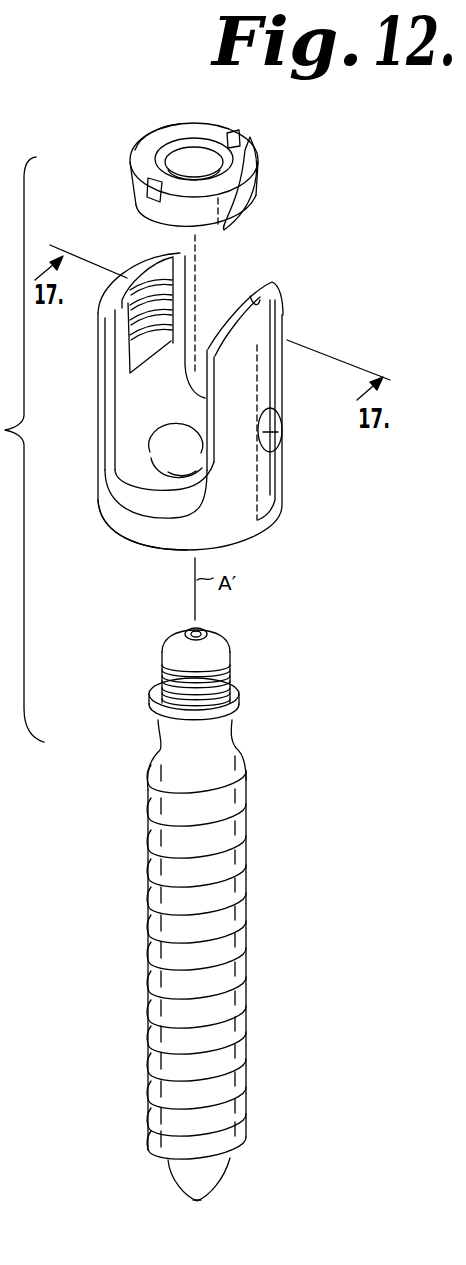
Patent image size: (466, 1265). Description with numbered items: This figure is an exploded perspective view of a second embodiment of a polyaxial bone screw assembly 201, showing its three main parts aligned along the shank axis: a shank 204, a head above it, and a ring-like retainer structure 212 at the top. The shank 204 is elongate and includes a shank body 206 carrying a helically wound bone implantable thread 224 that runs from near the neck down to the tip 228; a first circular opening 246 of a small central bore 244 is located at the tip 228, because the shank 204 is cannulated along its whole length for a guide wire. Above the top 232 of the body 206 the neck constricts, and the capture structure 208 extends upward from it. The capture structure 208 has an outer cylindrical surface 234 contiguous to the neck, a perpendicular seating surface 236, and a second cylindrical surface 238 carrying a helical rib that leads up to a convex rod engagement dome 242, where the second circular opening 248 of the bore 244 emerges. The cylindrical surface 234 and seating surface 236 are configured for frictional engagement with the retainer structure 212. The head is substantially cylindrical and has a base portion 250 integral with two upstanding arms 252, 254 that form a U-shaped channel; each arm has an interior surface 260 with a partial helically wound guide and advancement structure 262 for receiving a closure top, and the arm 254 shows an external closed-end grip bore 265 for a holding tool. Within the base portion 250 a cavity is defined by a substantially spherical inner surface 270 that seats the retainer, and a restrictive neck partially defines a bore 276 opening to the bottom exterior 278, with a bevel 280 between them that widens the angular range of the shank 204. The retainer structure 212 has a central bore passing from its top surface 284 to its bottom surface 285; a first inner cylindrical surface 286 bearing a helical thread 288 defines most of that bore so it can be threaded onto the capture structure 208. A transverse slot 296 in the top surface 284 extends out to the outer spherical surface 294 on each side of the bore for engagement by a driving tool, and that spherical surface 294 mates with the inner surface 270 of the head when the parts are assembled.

The polyaxial bone screw assembly 201 is at (122, 960).
The shank 204 is at (243, 822).
The shank body 206 is at (242, 883).
The capture structure 208 is at (230, 662).
The retainer structure 212 is at (258, 180).
The bone implantable thread 224 is at (242, 938).
The tip 228 is at (200, 1203).
The top of the body 232 is at (244, 750).
The outer cylindrical surface 234 is at (155, 707).
The seating surface 236 is at (232, 695).
The second cylindrical surface 238 is at (167, 678).
The rod engagement dome 242 is at (217, 645).
The central bore 244 is at (187, 631).
The first circular opening 246 is at (195, 1203).
The second circular opening 248 is at (203, 631).
The base portion 250 is at (237, 535).
The first arm 252 is at (97, 351).
The second arm 254 is at (280, 340).
The interior surface 260 is at (182, 251).
The guide and advancement structure 262 is at (167, 307).
The grip bore 265 is at (278, 433).
The inner surface 270 is at (160, 425).
The bore 276 is at (200, 462).
The bottom exterior 278 is at (117, 530).
The bevel 280 is at (200, 462).
The top surface 284 is at (143, 150).
The bottom surface 285 is at (232, 222).
The first inner cylindrical surface 286 is at (207, 145).
The helical rib or thread 288 is at (182, 148).
The outer spherical surface 294 is at (140, 186).
The transverse slot 296 is at (240, 136).